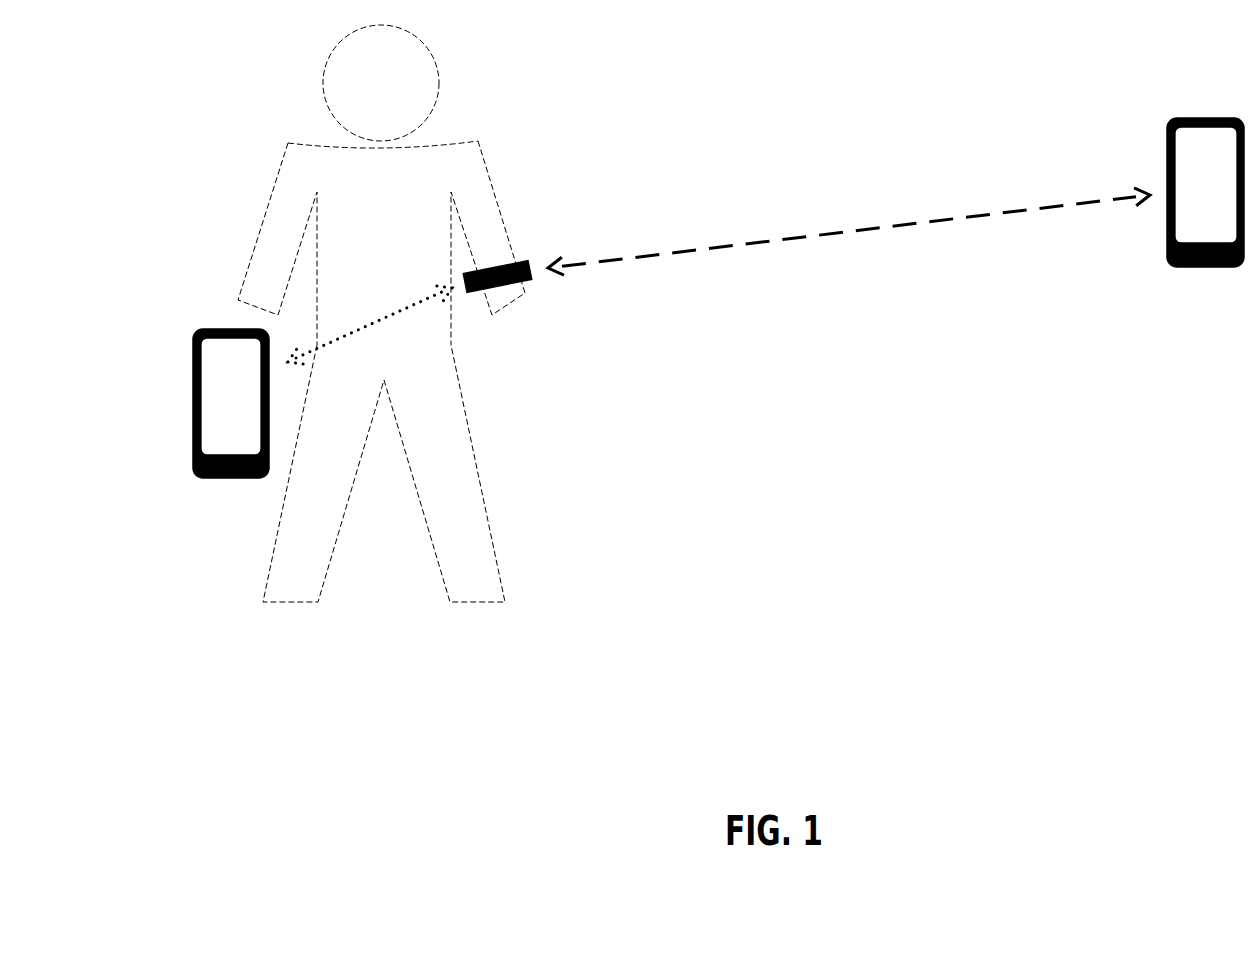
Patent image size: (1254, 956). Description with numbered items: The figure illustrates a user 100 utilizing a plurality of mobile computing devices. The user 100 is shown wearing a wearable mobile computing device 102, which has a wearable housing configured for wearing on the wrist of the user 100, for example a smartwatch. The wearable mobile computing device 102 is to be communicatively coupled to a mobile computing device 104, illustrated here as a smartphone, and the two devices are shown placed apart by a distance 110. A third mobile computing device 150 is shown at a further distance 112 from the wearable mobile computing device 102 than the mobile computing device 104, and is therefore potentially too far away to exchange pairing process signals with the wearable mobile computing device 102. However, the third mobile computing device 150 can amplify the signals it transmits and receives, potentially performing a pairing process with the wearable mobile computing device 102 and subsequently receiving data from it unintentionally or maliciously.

The user 100 is at (401, 628).
The wearable mobile computing device 102 is at (528, 257).
The mobile computing device 104 is at (231, 403).
The distance 110 is at (420, 303).
The further distance 112 is at (860, 232).
The third mobile computing device 150 is at (1205, 192).